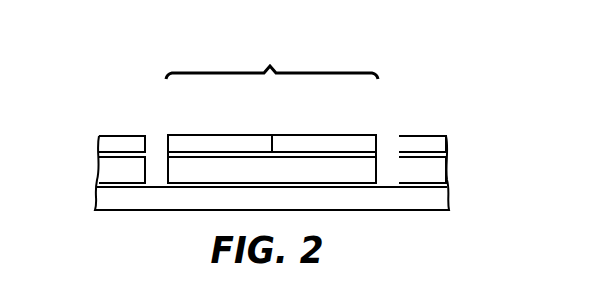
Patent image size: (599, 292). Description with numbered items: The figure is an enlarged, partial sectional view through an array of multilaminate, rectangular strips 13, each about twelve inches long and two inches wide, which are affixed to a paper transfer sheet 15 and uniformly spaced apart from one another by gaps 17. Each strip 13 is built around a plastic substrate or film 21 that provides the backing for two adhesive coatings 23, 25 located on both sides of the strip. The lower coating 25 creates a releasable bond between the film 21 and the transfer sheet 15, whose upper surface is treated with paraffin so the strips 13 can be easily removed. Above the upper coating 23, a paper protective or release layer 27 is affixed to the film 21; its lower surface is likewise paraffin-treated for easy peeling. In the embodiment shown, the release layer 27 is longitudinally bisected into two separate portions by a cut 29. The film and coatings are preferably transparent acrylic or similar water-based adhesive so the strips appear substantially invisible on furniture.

The strip 13 is at (272, 108).
The paper transfer sheet 15 is at (433, 200).
The gap 17 is at (157, 184).
The plastic substrate or film 21 is at (367, 167).
The adhesive coating 23 is at (99, 156).
The adhesive coating 25 is at (99, 186).
The paper protective or release layer 27 is at (118, 143).
The cut 29 is at (272, 136).